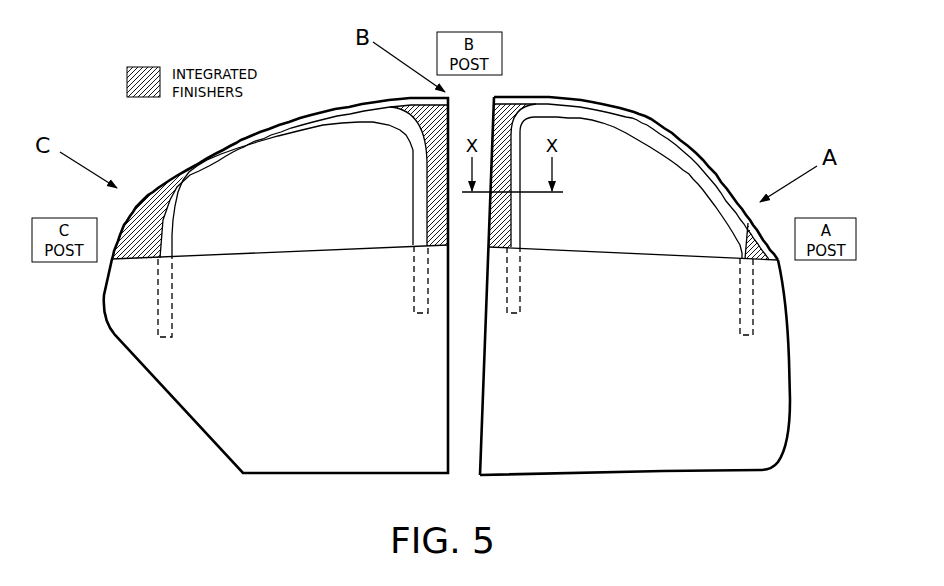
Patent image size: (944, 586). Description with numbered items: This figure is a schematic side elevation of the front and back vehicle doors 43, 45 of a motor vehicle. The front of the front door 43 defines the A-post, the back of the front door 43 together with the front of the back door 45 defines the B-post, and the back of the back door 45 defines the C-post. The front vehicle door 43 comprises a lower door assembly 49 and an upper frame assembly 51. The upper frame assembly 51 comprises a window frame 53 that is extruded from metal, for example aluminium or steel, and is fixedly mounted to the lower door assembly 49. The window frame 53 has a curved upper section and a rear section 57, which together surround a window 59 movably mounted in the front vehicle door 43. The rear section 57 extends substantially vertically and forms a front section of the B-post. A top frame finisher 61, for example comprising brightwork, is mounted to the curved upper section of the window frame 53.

The front vehicle door 43 is at (653, 463).
The back vehicle door 45 is at (318, 464).
The lower door assembly 49 is at (630, 411).
The upper frame assembly 51 is at (617, 88).
The window frame 53 is at (703, 190).
The rear section 57 is at (515, 217).
The window 59 is at (670, 158).
The top frame finisher 61 is at (658, 125).